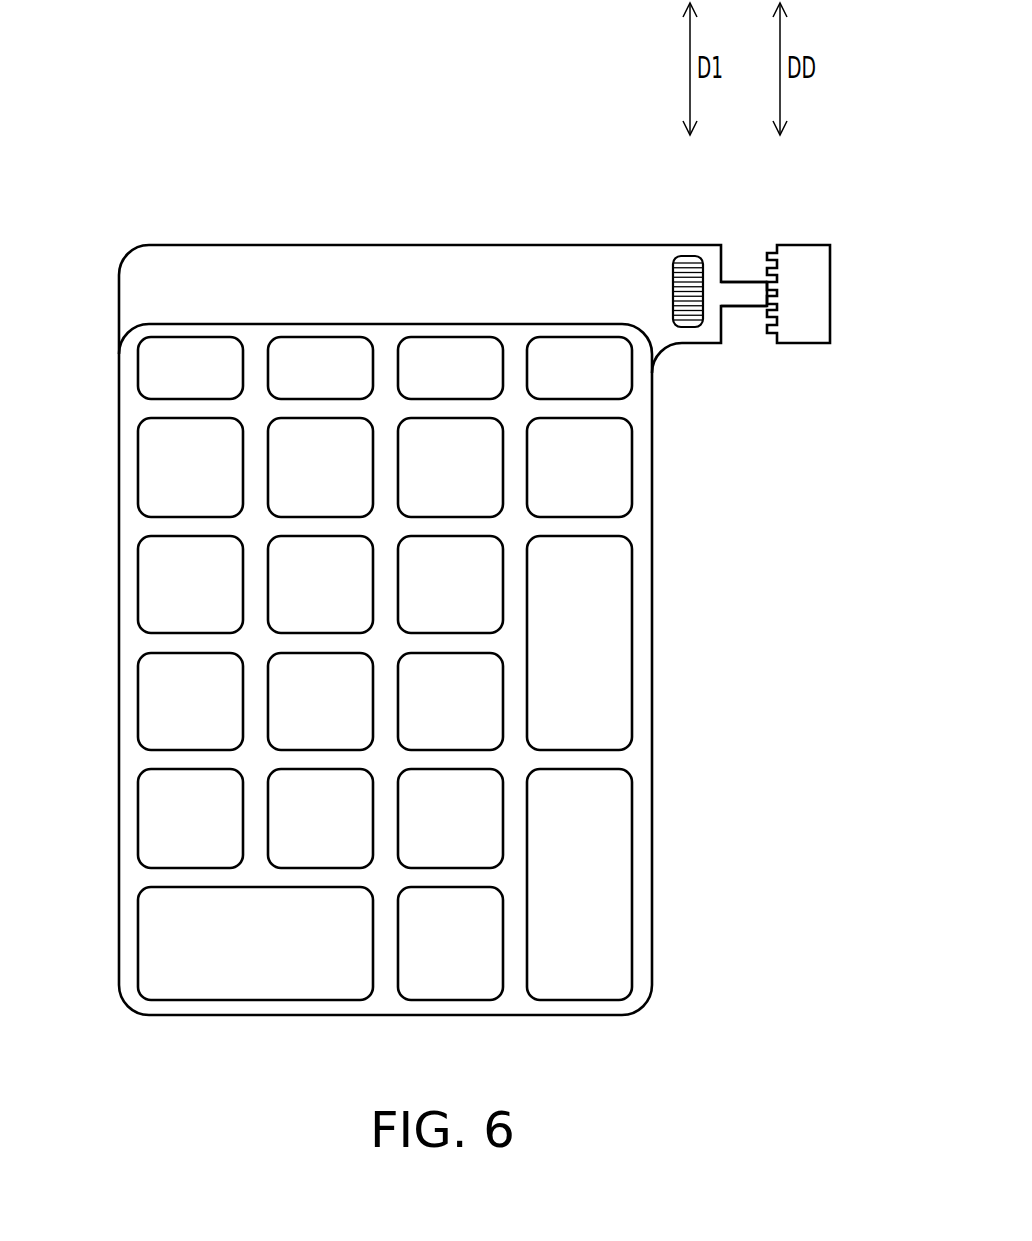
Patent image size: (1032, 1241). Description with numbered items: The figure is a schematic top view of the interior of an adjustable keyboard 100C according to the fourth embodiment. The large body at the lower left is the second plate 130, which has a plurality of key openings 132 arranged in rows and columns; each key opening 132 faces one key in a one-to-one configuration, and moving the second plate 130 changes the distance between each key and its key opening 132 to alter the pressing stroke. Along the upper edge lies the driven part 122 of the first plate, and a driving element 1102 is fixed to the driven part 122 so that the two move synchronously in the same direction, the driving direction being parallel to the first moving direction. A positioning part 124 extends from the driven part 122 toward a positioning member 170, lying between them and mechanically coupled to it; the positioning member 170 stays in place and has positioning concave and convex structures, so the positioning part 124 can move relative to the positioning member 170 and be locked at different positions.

The adjustable keyboard 100C is at (473, 603).
The driven part 122 is at (347, 268).
The driving element 1102 is at (690, 290).
The positioning part 124 is at (748, 288).
The positioning member 170 is at (818, 295).
The second plate 130 is at (634, 528).
The key openings 132 is at (395, 467).